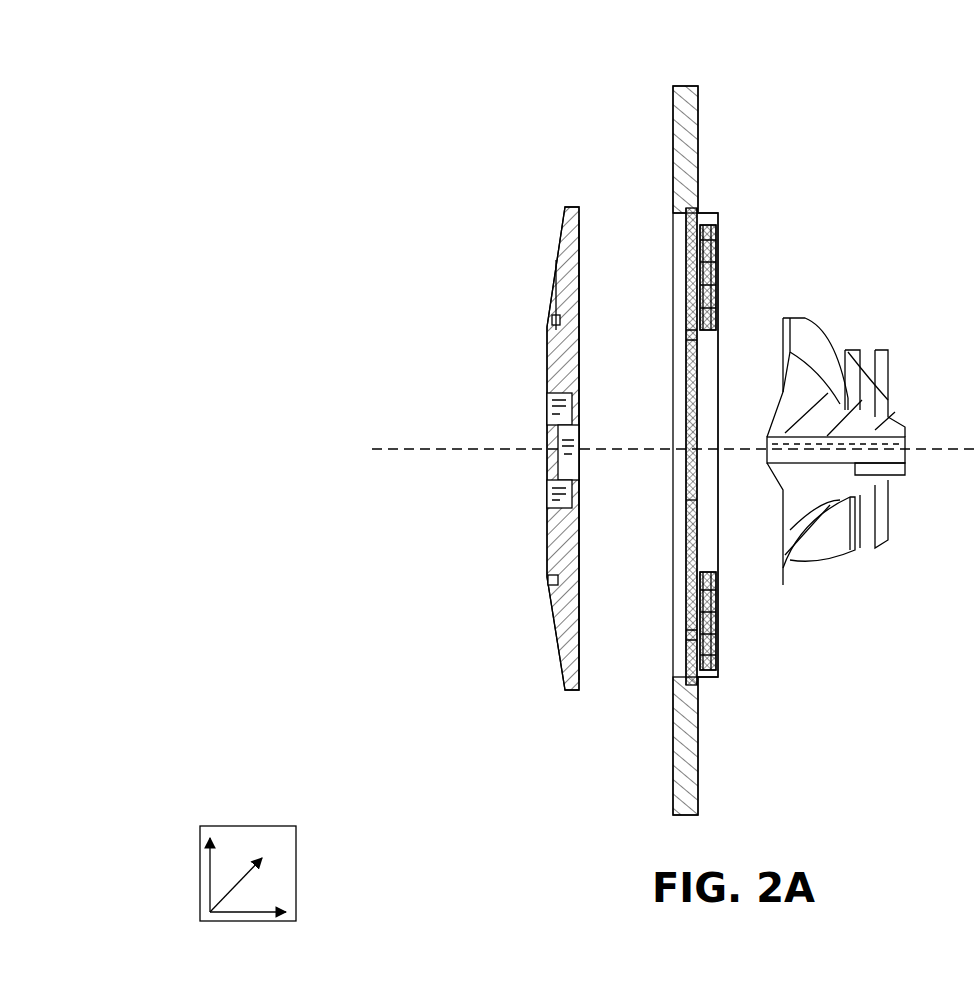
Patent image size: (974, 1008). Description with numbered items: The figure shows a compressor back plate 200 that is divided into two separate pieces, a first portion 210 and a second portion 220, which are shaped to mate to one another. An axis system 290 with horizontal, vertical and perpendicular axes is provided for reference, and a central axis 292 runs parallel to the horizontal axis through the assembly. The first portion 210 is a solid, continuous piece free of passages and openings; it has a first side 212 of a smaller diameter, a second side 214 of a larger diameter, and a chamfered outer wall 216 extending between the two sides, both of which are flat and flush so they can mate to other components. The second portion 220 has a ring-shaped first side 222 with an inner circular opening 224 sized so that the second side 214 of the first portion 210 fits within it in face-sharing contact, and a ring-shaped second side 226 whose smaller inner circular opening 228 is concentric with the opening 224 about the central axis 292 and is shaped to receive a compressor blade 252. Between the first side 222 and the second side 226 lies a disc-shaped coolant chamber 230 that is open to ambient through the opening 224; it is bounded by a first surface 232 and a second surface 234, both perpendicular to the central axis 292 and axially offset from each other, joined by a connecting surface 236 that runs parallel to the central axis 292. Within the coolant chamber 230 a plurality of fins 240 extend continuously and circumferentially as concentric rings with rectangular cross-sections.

The back plate 200 is at (874, 29).
The first portion 210 is at (564, 428).
The first side 212 is at (548, 392).
The second side 214 is at (581, 310).
The chamfered outer wall 216 is at (557, 281).
The second portion 220 is at (700, 417).
The first side 222 is at (672, 760).
The inner circular opening 224 is at (670, 506).
The second side 226 is at (719, 250).
The inner circular opening 228 is at (738, 411).
The coolant chamber 230 is at (688, 400).
The first surface 232 is at (690, 545).
The second surface 234 is at (719, 275).
The connecting surface 236 is at (719, 582).
The plurality of fins 240 is at (676, 336).
The compressor blade 252 is at (832, 348).
The axis system 290 is at (297, 846).
The central axis 292 is at (410, 448).